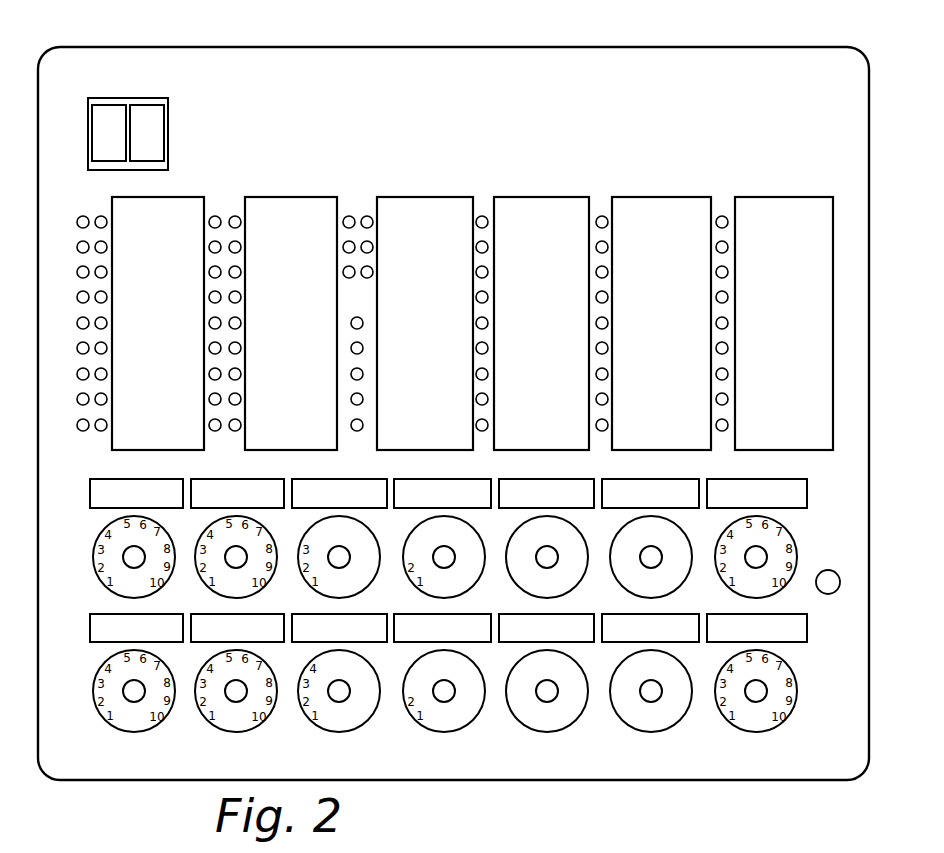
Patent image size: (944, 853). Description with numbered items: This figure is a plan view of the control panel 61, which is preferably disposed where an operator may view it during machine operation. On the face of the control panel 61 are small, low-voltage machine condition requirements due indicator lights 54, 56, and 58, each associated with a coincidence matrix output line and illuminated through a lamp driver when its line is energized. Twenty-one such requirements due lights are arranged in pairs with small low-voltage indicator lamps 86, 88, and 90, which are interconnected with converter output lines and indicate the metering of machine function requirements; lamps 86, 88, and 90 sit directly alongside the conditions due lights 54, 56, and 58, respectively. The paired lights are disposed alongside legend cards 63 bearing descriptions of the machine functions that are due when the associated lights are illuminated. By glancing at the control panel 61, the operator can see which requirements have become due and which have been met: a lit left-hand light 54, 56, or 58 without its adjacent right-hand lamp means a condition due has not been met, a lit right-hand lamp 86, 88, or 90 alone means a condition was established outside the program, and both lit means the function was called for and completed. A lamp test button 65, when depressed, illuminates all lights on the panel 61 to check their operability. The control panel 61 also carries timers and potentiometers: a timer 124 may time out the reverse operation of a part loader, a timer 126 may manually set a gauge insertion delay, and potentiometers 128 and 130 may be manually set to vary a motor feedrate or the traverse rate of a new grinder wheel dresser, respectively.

The control panel 61 is at (406, 63).
The legend cards 63 is at (197, 208).
The requirements due indicator light 54 is at (78, 217).
The requirements due indicator light 56 is at (77, 246).
The requirements due indicator light 58 is at (78, 275).
The indicator lamp 86 is at (107, 222).
The indicator lamp 88 is at (107, 248).
The indicator lamp 90 is at (107, 273).
The timer 124 is at (113, 570).
The timer 126 is at (238, 523).
The potentiometer 128 is at (651, 527).
The potentiometer 130 is at (755, 521).
The lamp test button 65 is at (828, 570).